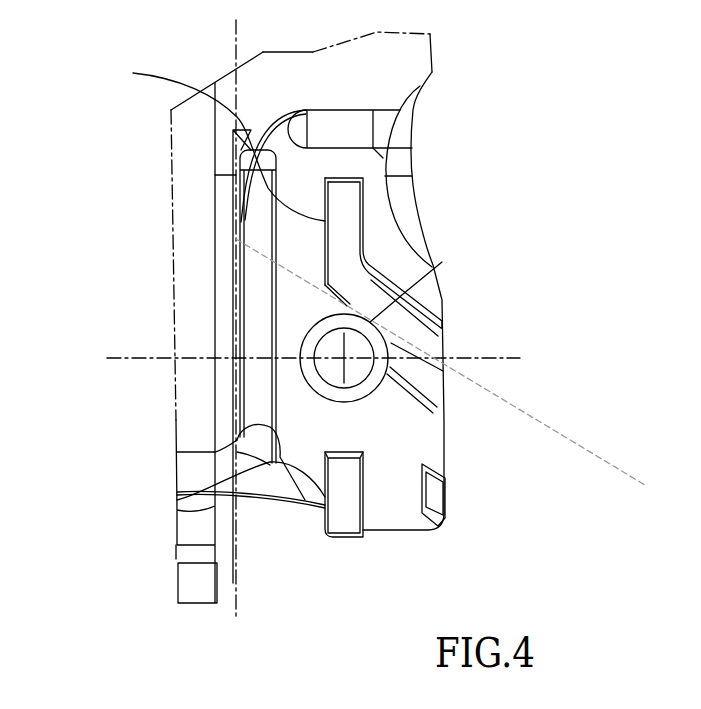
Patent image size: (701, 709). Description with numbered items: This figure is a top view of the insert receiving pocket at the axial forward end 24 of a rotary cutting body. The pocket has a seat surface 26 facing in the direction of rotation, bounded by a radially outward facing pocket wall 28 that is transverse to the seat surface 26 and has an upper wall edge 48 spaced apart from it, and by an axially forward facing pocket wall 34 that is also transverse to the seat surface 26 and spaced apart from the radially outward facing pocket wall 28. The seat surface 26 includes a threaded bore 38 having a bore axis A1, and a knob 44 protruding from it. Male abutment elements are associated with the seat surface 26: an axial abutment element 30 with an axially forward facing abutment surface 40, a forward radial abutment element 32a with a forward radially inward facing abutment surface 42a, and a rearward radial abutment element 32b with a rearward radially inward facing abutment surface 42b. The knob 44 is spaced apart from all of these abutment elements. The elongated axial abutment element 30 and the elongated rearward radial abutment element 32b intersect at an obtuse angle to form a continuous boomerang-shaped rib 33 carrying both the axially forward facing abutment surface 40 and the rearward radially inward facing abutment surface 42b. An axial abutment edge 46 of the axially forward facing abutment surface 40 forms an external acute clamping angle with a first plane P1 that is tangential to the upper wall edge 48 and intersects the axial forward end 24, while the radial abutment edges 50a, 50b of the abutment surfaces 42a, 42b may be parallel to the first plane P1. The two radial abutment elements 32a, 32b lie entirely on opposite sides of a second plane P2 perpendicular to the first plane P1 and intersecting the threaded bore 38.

The axial forward end 24 is at (260, 502).
The seat surface 26 is at (385, 478).
The radially outward facing pocket wall 28 is at (243, 223).
The axial abutment element 30 is at (408, 329).
The forward radial abutment element 32a is at (345, 503).
The rearward radial abutment element 32b is at (346, 219).
The boomerang-shaped rib 33 is at (373, 265).
The axially forward facing pocket wall 34 is at (349, 114).
The threaded bore 38 is at (359, 347).
The axially forward facing abutment surface 40 is at (442, 370).
The forward radially inward facing abutment surface 42a is at (325, 494).
The rearward radially inward facing abutment surface 42b is at (322, 196).
The knob 44 is at (436, 494).
The axial abutment edge 46 is at (445, 337).
The upper wall edge 48 is at (238, 308).
The forward radial abutment edge 50a is at (177, 500).
The rearward radial abutment edge 50b is at (204, 143).
The bore axis A1 is at (379, 395).
The first plane P1 is at (235, 326).
The second plane P2 is at (309, 359).